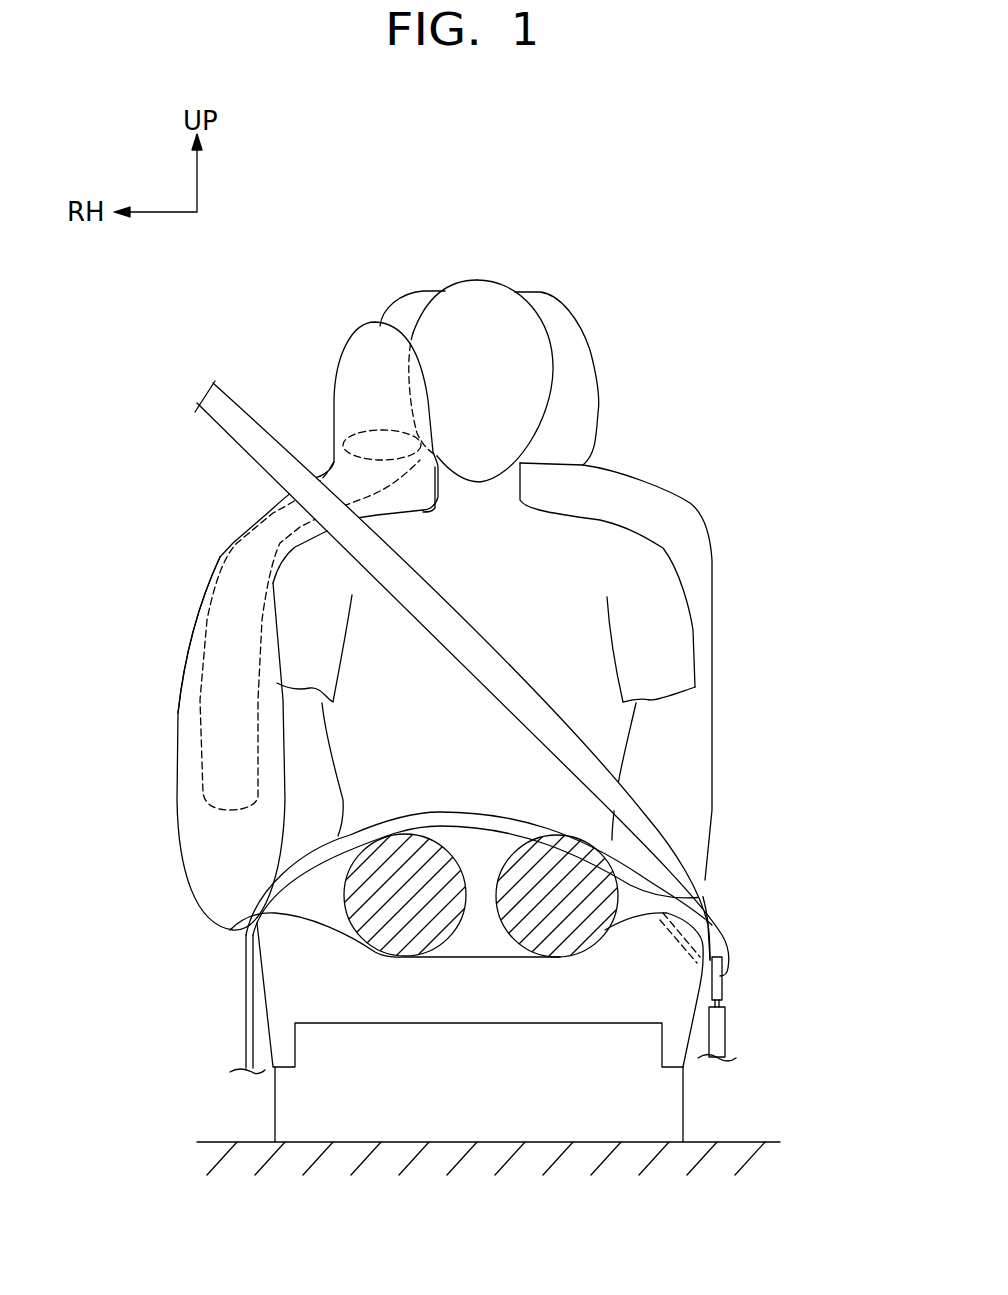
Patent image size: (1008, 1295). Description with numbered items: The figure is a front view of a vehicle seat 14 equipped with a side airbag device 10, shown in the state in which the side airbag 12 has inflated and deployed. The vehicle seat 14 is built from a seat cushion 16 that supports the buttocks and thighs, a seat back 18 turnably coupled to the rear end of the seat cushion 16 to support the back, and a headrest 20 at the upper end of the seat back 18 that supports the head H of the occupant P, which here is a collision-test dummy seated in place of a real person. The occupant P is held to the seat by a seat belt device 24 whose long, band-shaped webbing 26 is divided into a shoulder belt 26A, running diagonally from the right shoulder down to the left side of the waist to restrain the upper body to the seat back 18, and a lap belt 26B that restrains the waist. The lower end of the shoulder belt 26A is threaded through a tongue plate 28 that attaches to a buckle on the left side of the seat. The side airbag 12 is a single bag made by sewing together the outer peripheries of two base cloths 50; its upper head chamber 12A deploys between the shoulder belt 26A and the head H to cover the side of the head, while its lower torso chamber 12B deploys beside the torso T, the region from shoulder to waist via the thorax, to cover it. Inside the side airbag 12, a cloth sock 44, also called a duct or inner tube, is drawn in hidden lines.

The side airbag device 10 is at (188, 551).
The side airbag 12 is at (343, 352).
The head chamber 12A is at (334, 412).
The torso chamber 12B is at (188, 827).
The vehicle seat 14 is at (268, 1043).
The seat cushion 16 is at (275, 957).
The seat back 18 is at (688, 500).
The headrest 20 is at (597, 378).
The seat belt device 24 is at (744, 936).
The webbing 26 is at (462, 678).
The shoulder belt 26A is at (460, 617).
The lap belt 26B is at (442, 812).
The tongue plate 28 is at (723, 980).
The sock 44 is at (194, 674).
The base cloths 50 is at (188, 713).
The occupant P is at (487, 284).
The head H is at (552, 323).
The torso T is at (680, 577).